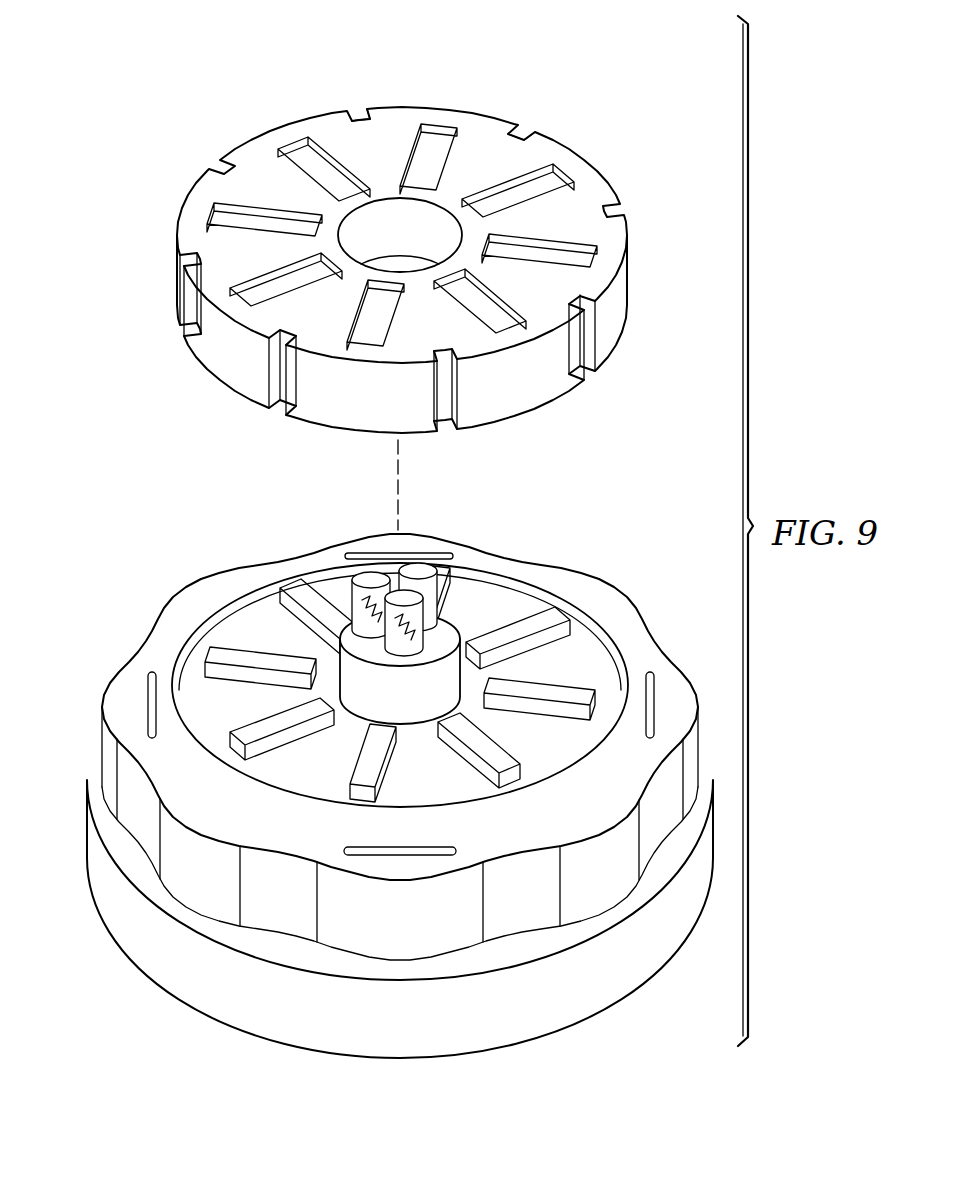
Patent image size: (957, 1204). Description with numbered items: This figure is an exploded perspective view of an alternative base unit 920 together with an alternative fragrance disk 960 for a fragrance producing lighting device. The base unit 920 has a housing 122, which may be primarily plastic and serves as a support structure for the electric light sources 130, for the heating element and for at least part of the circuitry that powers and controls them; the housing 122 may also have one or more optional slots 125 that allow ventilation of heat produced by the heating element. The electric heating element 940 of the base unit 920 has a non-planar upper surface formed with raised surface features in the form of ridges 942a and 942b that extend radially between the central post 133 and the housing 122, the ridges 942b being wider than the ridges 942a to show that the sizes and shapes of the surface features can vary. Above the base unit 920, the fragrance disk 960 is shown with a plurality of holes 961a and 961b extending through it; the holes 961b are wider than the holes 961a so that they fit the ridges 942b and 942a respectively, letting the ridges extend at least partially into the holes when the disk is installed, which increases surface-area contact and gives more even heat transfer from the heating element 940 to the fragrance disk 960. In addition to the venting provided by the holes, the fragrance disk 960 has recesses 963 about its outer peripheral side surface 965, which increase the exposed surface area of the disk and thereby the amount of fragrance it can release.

The base unit 920 is at (90, 180).
The fragrance disk 960 is at (615, 72).
The recesses 963 is at (362, 107).
The holes 961a is at (568, 188).
The holes 961b is at (598, 240).
The outer peripheral side surface 965 is at (614, 298).
The electric heating element 940 is at (500, 595).
The slots 125 is at (143, 690).
The housing 122 is at (103, 720).
The ridges 942a is at (298, 590).
The ridges 942b is at (442, 570).
The post 133 is at (340, 650).
The electric light sources 130 is at (372, 574).